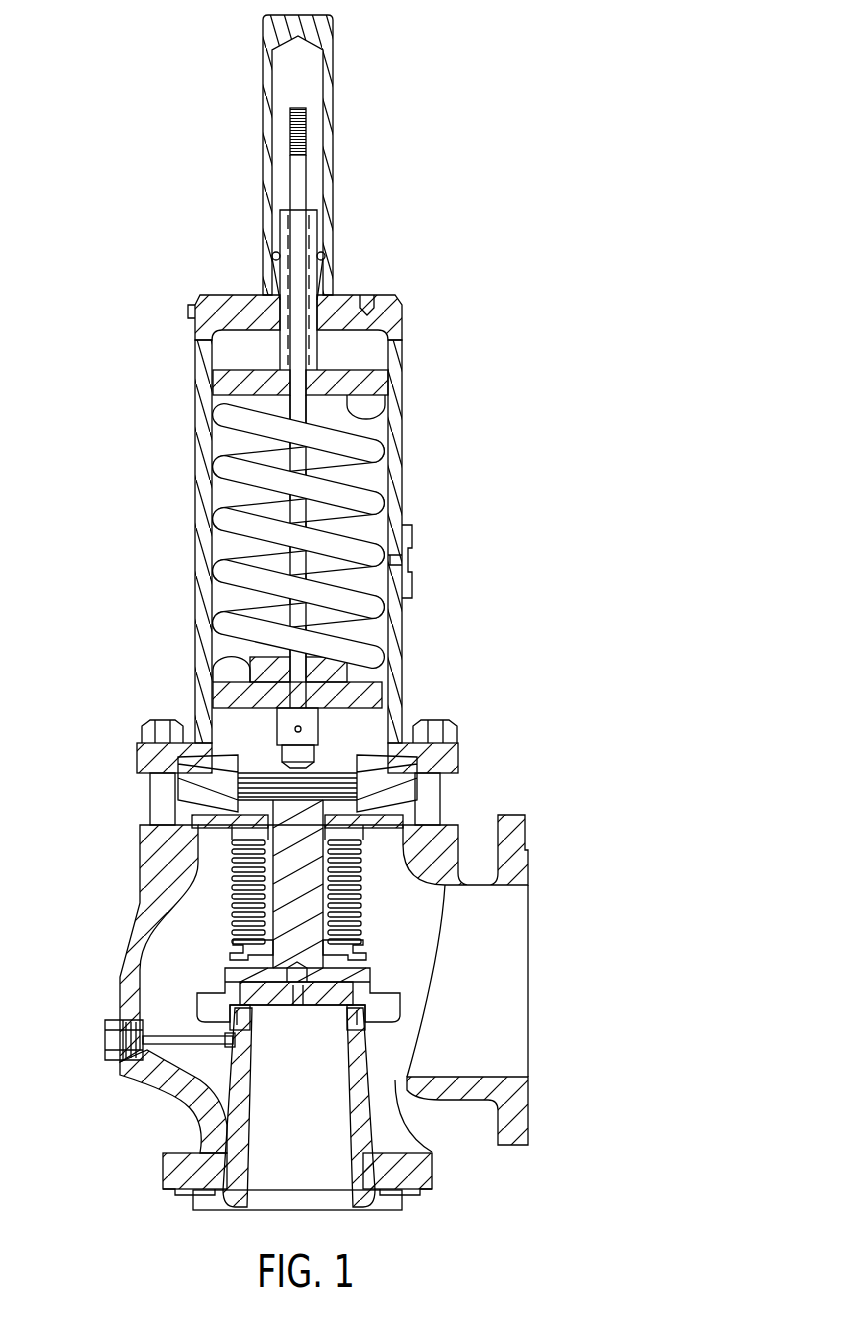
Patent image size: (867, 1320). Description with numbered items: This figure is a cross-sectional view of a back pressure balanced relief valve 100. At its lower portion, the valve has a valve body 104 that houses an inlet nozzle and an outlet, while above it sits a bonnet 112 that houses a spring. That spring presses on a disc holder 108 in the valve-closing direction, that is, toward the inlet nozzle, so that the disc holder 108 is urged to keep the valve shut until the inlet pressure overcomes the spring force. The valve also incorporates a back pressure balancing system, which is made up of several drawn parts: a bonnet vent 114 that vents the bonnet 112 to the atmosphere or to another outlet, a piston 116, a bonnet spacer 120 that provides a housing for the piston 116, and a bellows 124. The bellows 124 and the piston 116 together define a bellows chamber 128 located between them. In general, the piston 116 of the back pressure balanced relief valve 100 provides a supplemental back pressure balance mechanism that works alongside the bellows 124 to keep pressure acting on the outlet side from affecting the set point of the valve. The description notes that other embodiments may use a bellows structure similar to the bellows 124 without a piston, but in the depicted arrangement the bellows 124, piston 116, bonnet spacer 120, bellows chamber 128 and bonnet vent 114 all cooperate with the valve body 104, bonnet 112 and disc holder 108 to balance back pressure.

The back pressure balanced relief valve 100 is at (133, 70).
The valve body 104 is at (122, 998).
The disc holder 108 is at (326, 862).
The bonnet 112 is at (398, 376).
The bonnet vent 114 is at (412, 562).
The piston 116 is at (330, 785).
The bonnet spacer 120 is at (200, 785).
The bellows 124 is at (240, 885).
The bellows chamber 128 is at (255, 937).